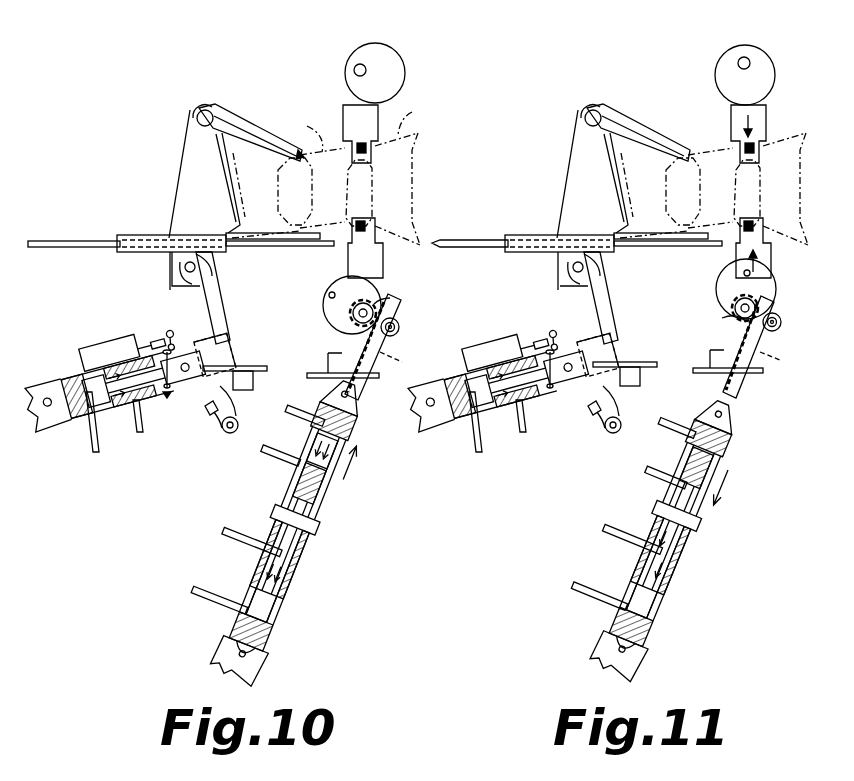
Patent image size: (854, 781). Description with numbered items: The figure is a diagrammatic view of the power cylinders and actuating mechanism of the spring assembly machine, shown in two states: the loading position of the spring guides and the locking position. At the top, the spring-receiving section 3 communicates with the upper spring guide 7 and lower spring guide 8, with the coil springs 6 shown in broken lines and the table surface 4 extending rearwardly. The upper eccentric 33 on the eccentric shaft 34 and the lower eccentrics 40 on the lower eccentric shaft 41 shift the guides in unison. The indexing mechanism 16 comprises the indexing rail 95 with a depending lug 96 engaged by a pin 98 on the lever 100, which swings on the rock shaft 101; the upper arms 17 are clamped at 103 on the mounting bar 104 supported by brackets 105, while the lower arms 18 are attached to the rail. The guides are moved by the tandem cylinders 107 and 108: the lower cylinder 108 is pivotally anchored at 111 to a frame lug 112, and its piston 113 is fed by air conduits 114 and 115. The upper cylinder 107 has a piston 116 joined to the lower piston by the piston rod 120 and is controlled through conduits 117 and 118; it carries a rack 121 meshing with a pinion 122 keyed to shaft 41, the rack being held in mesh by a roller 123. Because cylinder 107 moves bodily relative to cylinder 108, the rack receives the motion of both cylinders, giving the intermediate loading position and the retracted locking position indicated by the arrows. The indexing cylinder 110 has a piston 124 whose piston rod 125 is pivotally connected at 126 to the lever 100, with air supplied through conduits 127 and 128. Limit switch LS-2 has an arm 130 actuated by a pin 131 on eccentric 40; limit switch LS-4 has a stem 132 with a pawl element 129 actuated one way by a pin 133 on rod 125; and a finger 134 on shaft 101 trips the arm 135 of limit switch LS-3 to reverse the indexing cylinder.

In FIG. 10, the spring-receiving section 3 is at (424, 151).
In FIG. 10, the table surface 4 is at (43, 244).
In FIG. 11, the table surface 4 is at (470, 232).
In FIG. 10, the coil springs 6 is at (414, 164).
In FIG. 11, the coil springs 6 is at (714, 176).
In FIG. 10, the upper spring guide 7 is at (344, 118).
In FIG. 11, the upper spring guide 7 is at (727, 126).
In FIG. 10, the lower spring guide 8 is at (380, 263).
In FIG. 11, the lower spring guide 8 is at (753, 248).
In FIG. 10, the indexing mechanism 16 is at (188, 138).
In FIG. 11, the indexing mechanism 16 is at (575, 172).
In FIG. 10, the upper arms 17 is at (246, 132).
In FIG. 11, the upper arms 17 is at (638, 125).
In FIG. 10, the lower arms 18 is at (266, 247).
In FIG. 11, the lower arms 18 is at (668, 259).
In FIG. 10, the upper eccentric 33 is at (396, 78).
In FIG. 11, the upper eccentric 33 is at (758, 74).
In FIG. 10, the eccentric shaft 34 is at (360, 64).
In FIG. 10, the eccentrics 40 is at (330, 306).
In FIG. 11, the eccentrics 40 is at (735, 289).
In FIG. 10, the eccentric shaft 41 is at (352, 320).
In FIG. 11, the eccentric shaft 41 is at (765, 308).
In FIG. 10, the indexing rail 95 is at (137, 235).
In FIG. 11, the indexing rail 95 is at (559, 228).
In FIG. 10, the lug 96 is at (170, 268).
In FIG. 10, the pin 98 is at (212, 268).
In FIG. 11, the pin 98 is at (559, 271).
In FIG. 10, the lever 100 is at (214, 300).
In FIG. 11, the lever 100 is at (610, 298).
In FIG. 10, the rock shaft 101 is at (183, 368).
In FIG. 11, the rock shaft 101 is at (566, 368).
In FIG. 11, the clamp 103 is at (676, 83).
In FIG. 10, the mounting bar 104 is at (203, 110).
In FIG. 11, the mounting bar 104 is at (591, 115).
In FIG. 10, the brackets 105 is at (186, 178).
In FIG. 11, the brackets 105 is at (550, 174).
In FIG. 10, the upper cylinder 107 is at (312, 475).
In FIG. 11, the upper cylinder 107 is at (691, 480).
In FIG. 10, the lower cylinder 108 is at (251, 631).
In FIG. 11, the lower cylinder 108 is at (631, 627).
In FIG. 10, the indexing cylinder 110 is at (98, 391).
In FIG. 11, the indexing cylinder 110 is at (481, 391).
In FIG. 10, the pivotal anchor 111 is at (245, 648).
In FIG. 10, the lug 112 is at (238, 661).
In FIG. 11, the lug 112 is at (618, 656).
In FIG. 10, the piston 113 is at (274, 572).
In FIG. 11, the piston 113 is at (655, 568).
In FIG. 10, the air conduit 114 is at (252, 541).
In FIG. 11, the air conduit 114 is at (632, 539).
In FIG. 10, the air conduit 115 is at (219, 600).
In FIG. 11, the air conduit 115 is at (599, 596).
In FIG. 10, the piston 116 is at (318, 507).
In FIG. 11, the piston 116 is at (686, 510).
In FIG. 10, the conduit 117 is at (305, 415).
In FIG. 11, the conduit 117 is at (677, 428).
In FIG. 10, the conduit 118 is at (281, 455).
In FIG. 11, the conduit 118 is at (666, 477).
In FIG. 10, the piston rod 120 is at (295, 519).
In FIG. 11, the piston rod 120 is at (677, 515).
In FIG. 10, the rack 121 is at (386, 340).
In FIG. 11, the rack 121 is at (753, 350).
In FIG. 10, the pinion 122 is at (380, 298).
In FIG. 11, the pinion 122 is at (719, 322).
In FIG. 10, the roller 123 is at (398, 320).
In FIG. 11, the roller 123 is at (787, 331).
In FIG. 10, the piston 124 is at (124, 383).
In FIG. 11, the piston 124 is at (507, 383).
In FIG. 10, the piston rod 125 is at (166, 392).
In FIG. 11, the piston rod 125 is at (547, 383).
In FIG. 10, the pivotal connection 126 is at (174, 412).
In FIG. 10, the conduit 127 is at (92, 448).
In FIG. 11, the conduit 127 is at (472, 434).
In FIG. 10, the conduit 128 is at (150, 446).
In FIG. 11, the conduit 128 is at (519, 431).
In FIG. 10, the pawl element 129 is at (170, 340).
In FIG. 11, the pawl element 129 is at (553, 340).
In FIG. 10, the arm 130 is at (404, 365).
In FIG. 11, the arm 130 is at (783, 363).
In FIG. 10, the pin 131 is at (331, 292).
In FIG. 11, the pin 131 is at (766, 276).
In FIG. 10, the stem 132 is at (151, 346).
In FIG. 11, the stem 132 is at (534, 346).
In FIG. 10, the pin 133 is at (215, 355).
In FIG. 11, the pin 133 is at (598, 355).
In FIG. 10, the finger 134 is at (216, 422).
In FIG. 11, the finger 134 is at (587, 419).
In FIG. 10, the arm 135 is at (244, 394).
In FIG. 11, the arm 135 is at (569, 421).
In FIG. 10, the limit switch LS-2 is at (328, 366).
In FIG. 11, the limit switch LS-2 is at (721, 356).
In FIG. 10, the limit switch LS-3 is at (249, 376).
In FIG. 11, the limit switch LS-3 is at (640, 380).
In FIG. 10, the limit switch LS-4 is at (109, 352).
In FIG. 11, the limit switch LS-4 is at (492, 352).